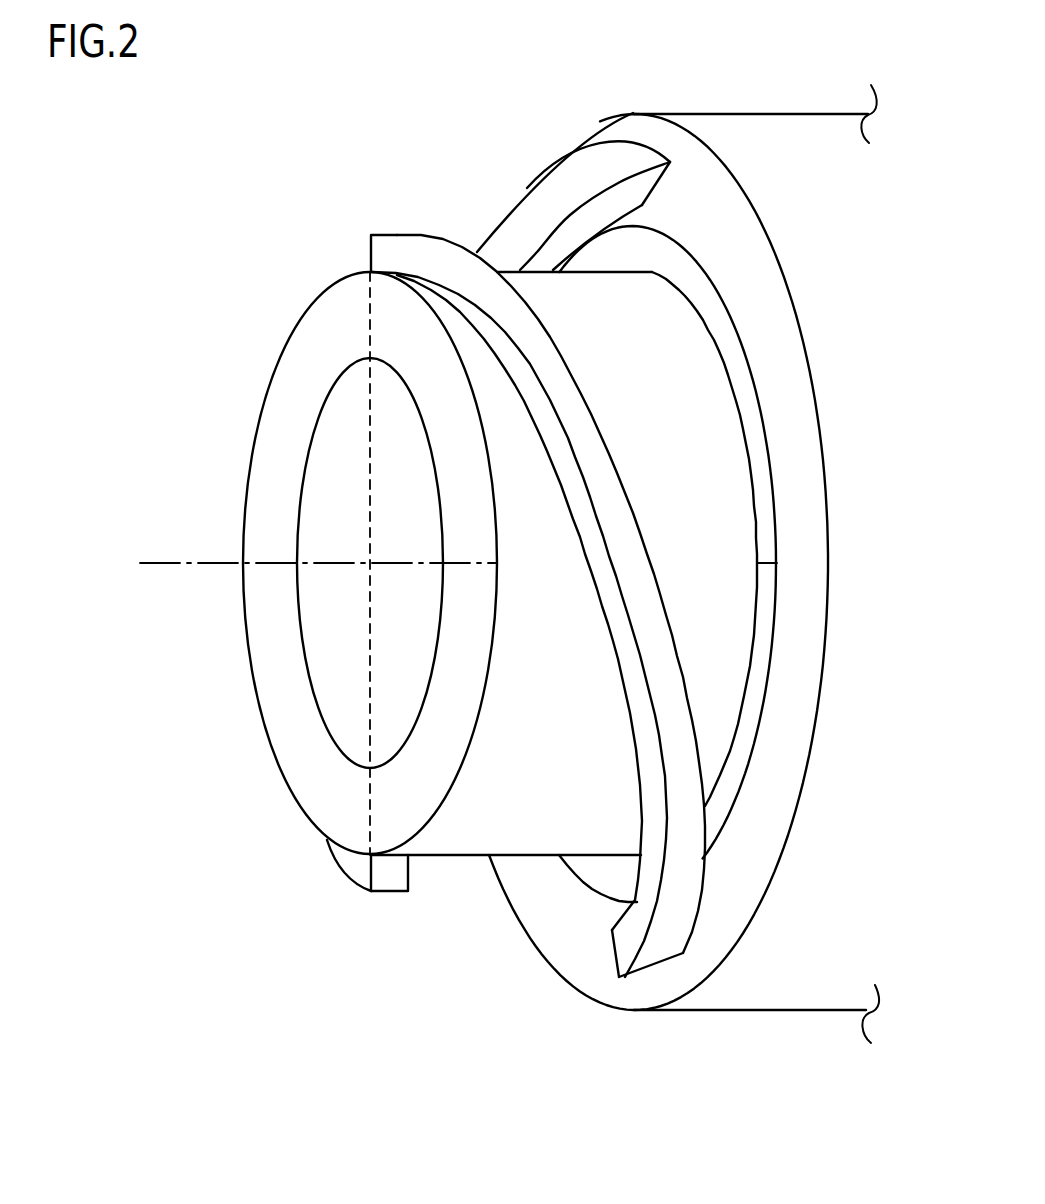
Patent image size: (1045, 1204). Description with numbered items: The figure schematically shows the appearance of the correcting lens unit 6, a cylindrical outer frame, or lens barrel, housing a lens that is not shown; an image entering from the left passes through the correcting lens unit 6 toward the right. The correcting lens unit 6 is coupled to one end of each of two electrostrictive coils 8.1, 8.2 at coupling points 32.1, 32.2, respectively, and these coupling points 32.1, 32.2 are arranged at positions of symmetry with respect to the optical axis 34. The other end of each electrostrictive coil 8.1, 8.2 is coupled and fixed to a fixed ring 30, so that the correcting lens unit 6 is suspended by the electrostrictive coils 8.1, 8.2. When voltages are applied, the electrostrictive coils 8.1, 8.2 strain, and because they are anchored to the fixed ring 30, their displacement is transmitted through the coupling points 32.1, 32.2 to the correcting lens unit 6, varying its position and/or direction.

The correcting lens unit 6 is at (447, 835).
The electrostrictive coil 8.1 is at (682, 890).
The electrostrictive coil 8.2 is at (508, 242).
The fixed ring 30 is at (752, 278).
The coupling point 32.1 is at (370, 270).
The coupling point 32.2 is at (388, 858).
The optical axis 34 is at (180, 563).